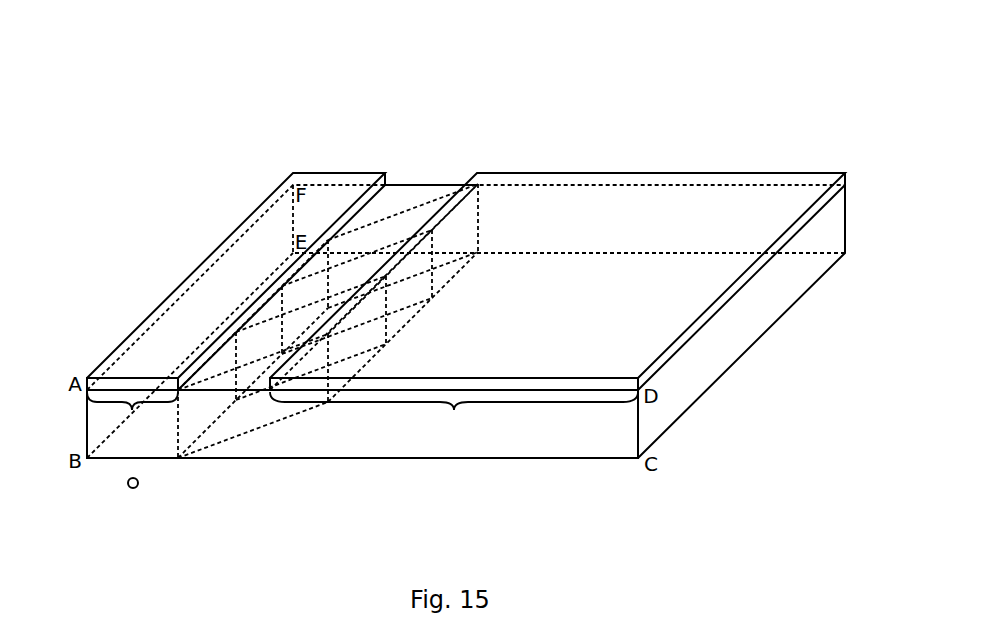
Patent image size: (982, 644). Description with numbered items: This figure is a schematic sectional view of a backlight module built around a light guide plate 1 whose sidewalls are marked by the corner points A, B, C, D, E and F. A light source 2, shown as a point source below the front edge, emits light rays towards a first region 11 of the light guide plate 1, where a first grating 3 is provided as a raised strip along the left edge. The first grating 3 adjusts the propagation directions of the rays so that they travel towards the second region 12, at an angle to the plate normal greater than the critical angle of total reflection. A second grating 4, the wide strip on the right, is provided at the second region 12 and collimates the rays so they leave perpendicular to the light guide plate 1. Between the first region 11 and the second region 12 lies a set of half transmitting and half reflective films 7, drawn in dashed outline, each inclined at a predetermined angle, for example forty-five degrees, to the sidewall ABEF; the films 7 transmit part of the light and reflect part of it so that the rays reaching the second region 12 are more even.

The light guide plate 1 is at (332, 461).
The light source 2 is at (134, 493).
The first grating 3 is at (337, 172).
The second grating 4 is at (625, 172).
The half transmitting and half reflective film 7 is at (202, 430).
The first region 11 is at (132, 414).
The second region 12 is at (454, 414).